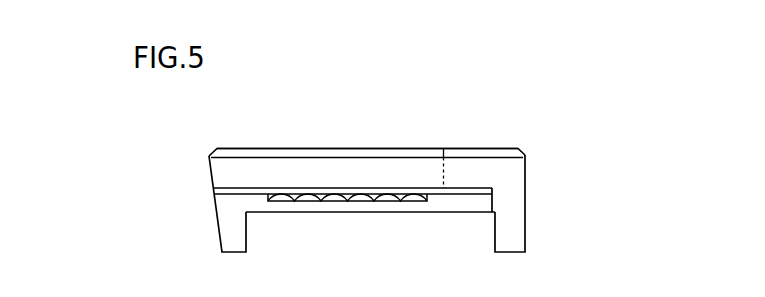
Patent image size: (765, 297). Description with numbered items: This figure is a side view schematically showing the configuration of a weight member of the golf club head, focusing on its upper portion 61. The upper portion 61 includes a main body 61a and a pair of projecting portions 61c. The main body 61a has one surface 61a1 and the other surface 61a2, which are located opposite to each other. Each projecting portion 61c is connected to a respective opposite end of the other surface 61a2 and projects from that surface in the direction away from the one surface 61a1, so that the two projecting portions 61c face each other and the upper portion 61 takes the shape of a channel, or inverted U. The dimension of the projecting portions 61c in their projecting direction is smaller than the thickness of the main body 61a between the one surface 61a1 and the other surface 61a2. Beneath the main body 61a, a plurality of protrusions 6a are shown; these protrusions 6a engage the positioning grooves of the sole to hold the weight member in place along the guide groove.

The upper portion 61 is at (372, 185).
The main body 61a is at (367, 158).
The one surface 61a1 is at (307, 148).
The other surface 61a2 is at (247, 189).
The projecting portion 61c is at (230, 225).
The protrusion 6a is at (322, 202).